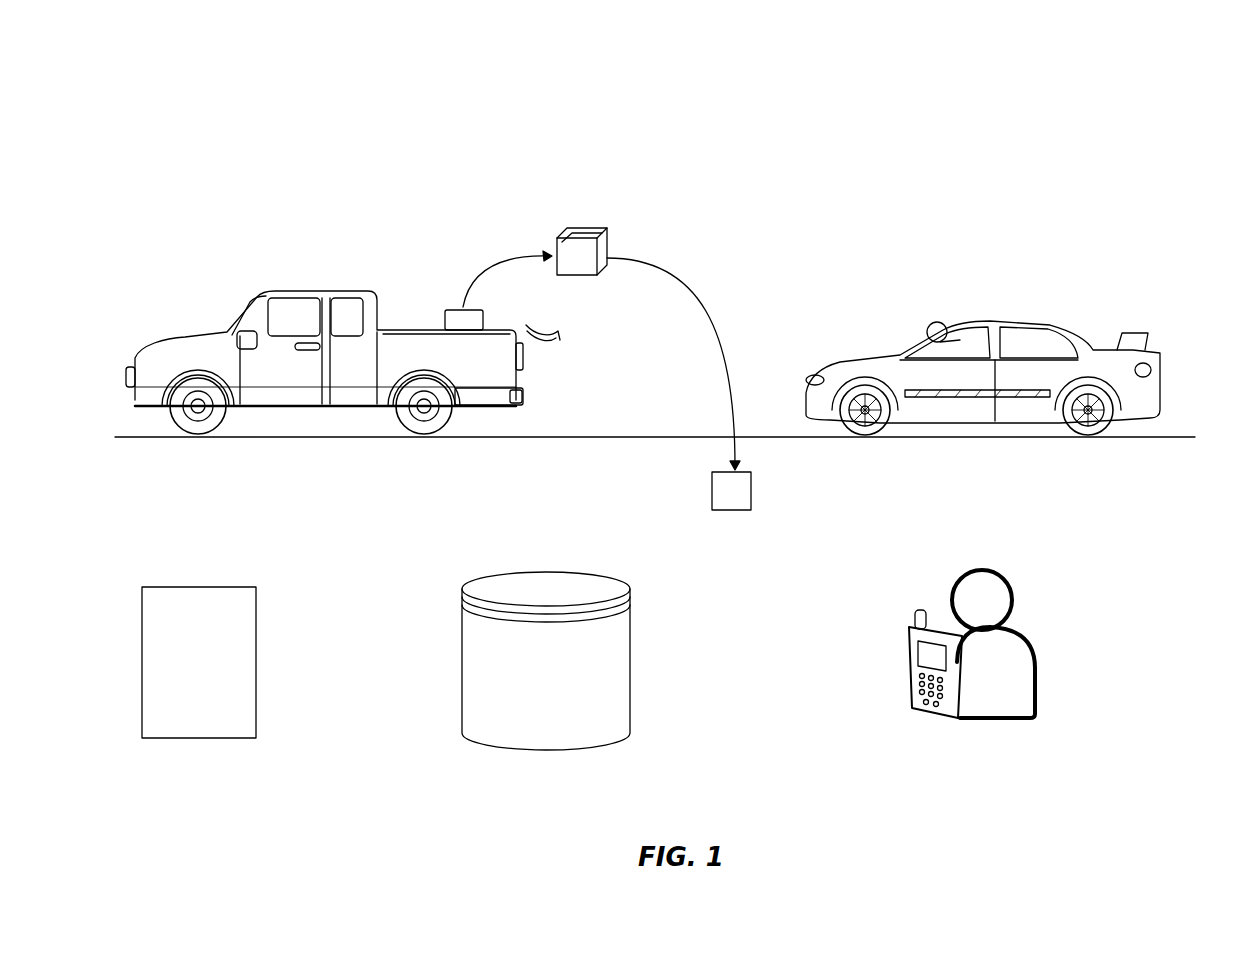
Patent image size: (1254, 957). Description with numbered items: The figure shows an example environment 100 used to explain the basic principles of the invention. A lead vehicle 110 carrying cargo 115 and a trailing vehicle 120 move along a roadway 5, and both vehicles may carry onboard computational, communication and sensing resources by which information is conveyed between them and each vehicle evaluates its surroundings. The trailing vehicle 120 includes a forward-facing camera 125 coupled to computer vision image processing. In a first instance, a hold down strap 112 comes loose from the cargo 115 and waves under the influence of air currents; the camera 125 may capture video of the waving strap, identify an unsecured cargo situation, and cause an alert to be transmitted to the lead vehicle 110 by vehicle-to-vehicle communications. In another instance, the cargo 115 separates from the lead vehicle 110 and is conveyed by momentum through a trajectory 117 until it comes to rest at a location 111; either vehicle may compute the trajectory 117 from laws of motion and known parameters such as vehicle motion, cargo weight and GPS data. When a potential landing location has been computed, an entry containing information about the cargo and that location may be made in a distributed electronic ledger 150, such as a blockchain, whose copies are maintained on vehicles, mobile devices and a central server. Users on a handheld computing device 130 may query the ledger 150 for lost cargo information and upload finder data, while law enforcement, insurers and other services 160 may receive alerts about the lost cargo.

The environment 100 is at (158, 100).
The roadway 5 is at (548, 438).
The lead vehicle 110 is at (302, 288).
The cargo 115 is at (448, 308).
The hold down strap 112 is at (547, 342).
The trajectory 117 is at (652, 278).
The location 111 is at (806, 528).
The trailing vehicle 120 is at (1030, 322).
The forward-facing camera 125 is at (940, 322).
The distributed electronic ledger 150 is at (546, 572).
The law enforcement, insurers and other services 160 is at (197, 586).
The handheld computing device 130 is at (930, 712).